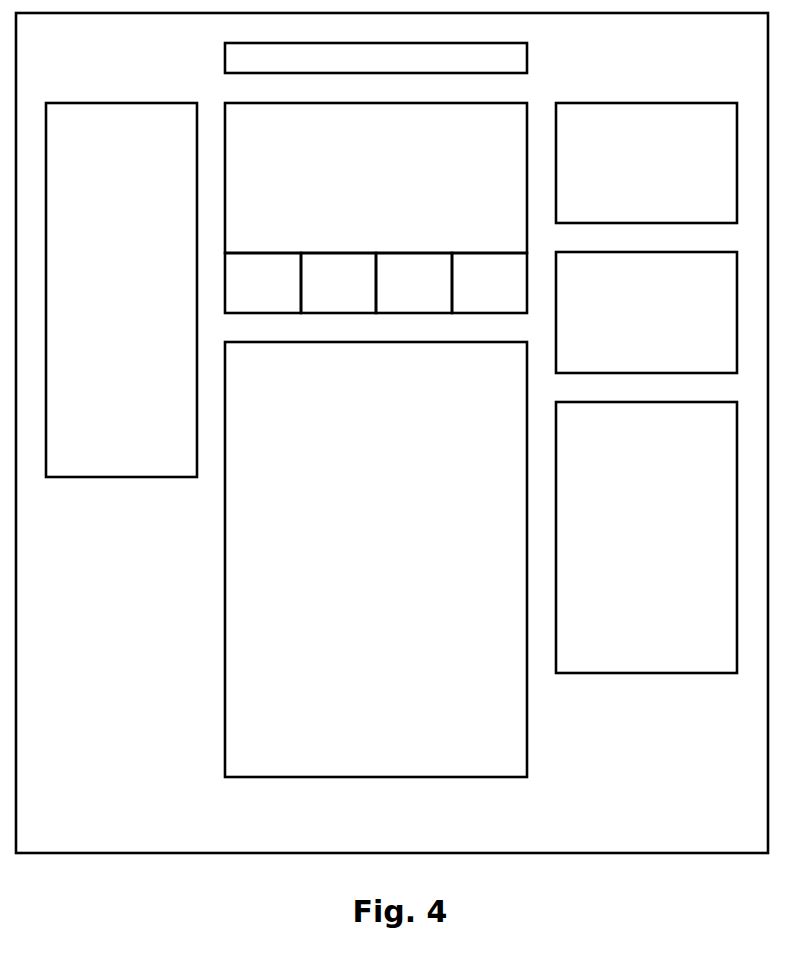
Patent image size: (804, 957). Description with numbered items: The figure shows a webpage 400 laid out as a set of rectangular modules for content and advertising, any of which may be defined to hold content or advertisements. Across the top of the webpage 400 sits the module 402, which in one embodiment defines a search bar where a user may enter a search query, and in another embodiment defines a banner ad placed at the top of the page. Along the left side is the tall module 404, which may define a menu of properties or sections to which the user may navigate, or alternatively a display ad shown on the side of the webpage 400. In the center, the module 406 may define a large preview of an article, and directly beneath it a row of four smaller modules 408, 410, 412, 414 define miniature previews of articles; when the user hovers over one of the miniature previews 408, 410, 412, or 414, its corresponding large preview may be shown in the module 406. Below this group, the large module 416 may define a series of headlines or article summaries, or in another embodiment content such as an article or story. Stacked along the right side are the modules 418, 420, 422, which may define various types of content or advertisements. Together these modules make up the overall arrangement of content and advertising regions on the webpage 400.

The webpage 400 is at (374, 840).
The module 402 is at (359, 68).
The module 404 is at (103, 300).
The module 406 is at (359, 190).
The module 408 is at (246, 293).
The module 410 is at (321, 293).
The module 412 is at (396, 293).
The module 414 is at (472, 293).
The module 416 is at (359, 573).
The module 418 is at (630, 173).
The module 420 is at (630, 323).
The module 422 is at (630, 548).